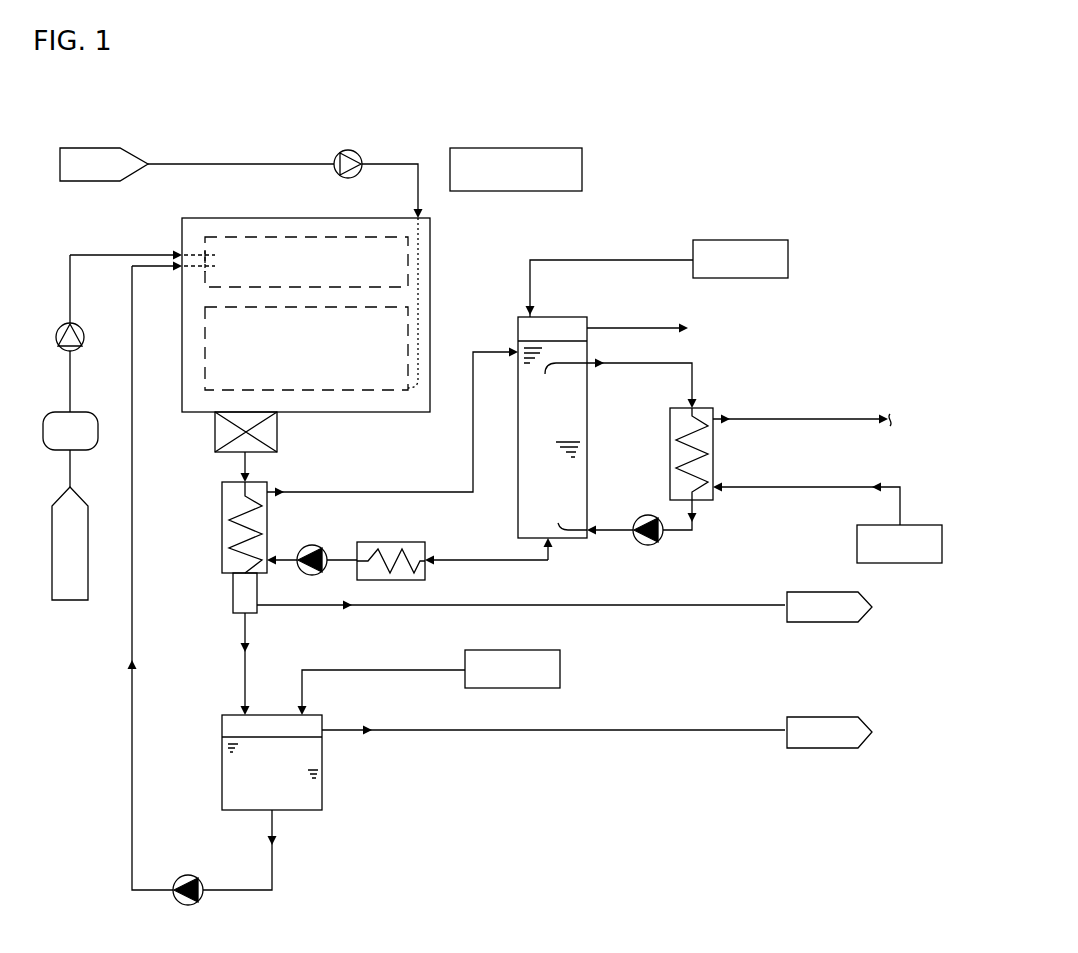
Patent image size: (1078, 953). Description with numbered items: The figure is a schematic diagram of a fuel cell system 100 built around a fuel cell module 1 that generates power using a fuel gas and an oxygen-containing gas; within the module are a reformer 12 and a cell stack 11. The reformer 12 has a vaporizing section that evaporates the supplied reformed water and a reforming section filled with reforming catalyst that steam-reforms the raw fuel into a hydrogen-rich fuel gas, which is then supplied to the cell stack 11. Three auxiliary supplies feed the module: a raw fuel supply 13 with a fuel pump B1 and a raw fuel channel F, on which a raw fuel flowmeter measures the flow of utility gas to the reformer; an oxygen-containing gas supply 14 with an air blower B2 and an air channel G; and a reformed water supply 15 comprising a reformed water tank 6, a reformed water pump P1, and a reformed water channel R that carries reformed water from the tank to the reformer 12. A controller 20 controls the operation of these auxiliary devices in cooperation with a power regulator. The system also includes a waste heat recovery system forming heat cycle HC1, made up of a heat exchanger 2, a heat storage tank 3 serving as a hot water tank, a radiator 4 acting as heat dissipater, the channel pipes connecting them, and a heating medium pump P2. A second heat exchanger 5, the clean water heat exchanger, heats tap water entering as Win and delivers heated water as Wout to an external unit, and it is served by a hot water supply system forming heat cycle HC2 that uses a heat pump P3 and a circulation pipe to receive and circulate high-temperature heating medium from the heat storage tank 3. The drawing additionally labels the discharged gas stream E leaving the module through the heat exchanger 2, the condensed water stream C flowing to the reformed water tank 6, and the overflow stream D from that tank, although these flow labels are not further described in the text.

The fuel cell system 100 is at (296, 116).
The fuel cell module 1 is at (278, 310).
The cell stack 11 is at (306, 348).
The reformer 12 is at (306, 262).
The raw fuel supply 13 is at (68, 248).
The oxygen-containing gas supply 14 is at (181, 158).
The reformed water supply 15 is at (304, 850).
The heat exchanger 2 is at (220, 522).
The heat storage tank 3 is at (566, 421).
The radiator 4 is at (388, 542).
The second heat exchanger 5 is at (670, 456).
The reformed water tank 6 is at (284, 791).
The controller 20 is at (513, 146).
The fuel pump B1 is at (56, 328).
The air blower B2 is at (362, 150).
The reformed water pump P1 is at (188, 874).
The heating medium pump P2 is at (312, 546).
The heat pump P3 is at (660, 542).
The raw fuel channel F is at (72, 288).
The air channel G is at (232, 162).
The exhaust gas E is at (250, 454).
The condensed water C is at (242, 684).
The reformed water channel R is at (135, 578).
The overflow water D is at (612, 733).
The heat cycle HC1 is at (470, 442).
The heat cycle HC2 is at (700, 376).
The heated water outlet Wout is at (815, 416).
The tap water inlet Win is at (815, 491).